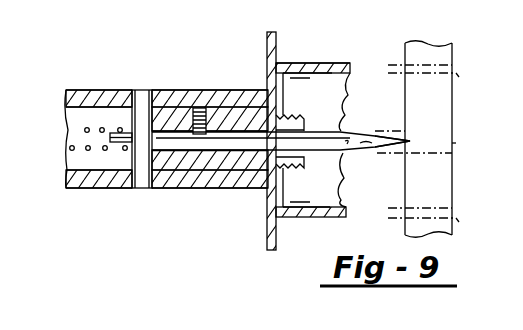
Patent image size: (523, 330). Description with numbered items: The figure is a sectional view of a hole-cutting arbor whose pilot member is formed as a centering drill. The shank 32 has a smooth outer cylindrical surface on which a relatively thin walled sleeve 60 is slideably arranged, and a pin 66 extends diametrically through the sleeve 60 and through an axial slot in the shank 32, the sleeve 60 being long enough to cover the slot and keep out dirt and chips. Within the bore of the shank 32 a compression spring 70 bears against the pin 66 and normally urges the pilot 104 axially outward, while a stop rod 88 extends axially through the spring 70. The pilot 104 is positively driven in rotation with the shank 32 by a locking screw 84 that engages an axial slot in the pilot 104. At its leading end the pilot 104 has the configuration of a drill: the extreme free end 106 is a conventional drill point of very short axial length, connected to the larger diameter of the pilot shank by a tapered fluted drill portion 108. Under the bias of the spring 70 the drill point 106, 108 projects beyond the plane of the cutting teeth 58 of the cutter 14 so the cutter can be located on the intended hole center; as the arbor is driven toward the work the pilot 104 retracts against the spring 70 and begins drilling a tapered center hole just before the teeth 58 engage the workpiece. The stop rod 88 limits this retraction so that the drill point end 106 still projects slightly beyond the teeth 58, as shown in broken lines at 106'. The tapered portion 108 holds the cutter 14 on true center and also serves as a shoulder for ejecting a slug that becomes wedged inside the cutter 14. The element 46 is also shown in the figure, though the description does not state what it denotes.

The cutter 14 is at (307, 59).
The shank 32 is at (217, 167).
The wall 46 is at (276, 237).
The teeth 58 is at (342, 95).
The sleeve 60 is at (252, 170).
The pin 66 is at (143, 103).
The compression spring 70 is at (87, 128).
The locking screw 84 is at (203, 111).
The stop rod 88 is at (123, 144).
The pilot 104 is at (166, 136).
The drill point end 106 is at (436, 139).
The retracted drill point position 106' is at (485, 152).
The tapered fluted drill portion 108 is at (350, 137).